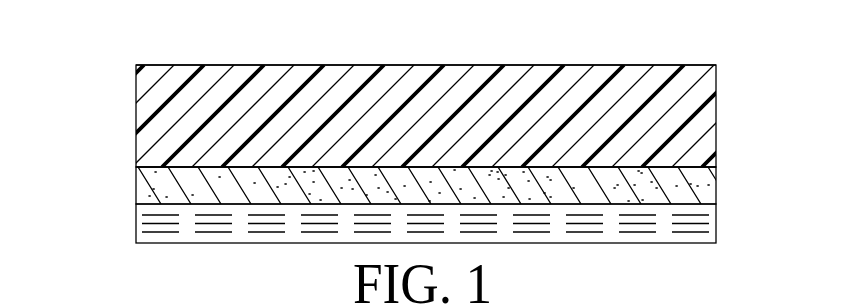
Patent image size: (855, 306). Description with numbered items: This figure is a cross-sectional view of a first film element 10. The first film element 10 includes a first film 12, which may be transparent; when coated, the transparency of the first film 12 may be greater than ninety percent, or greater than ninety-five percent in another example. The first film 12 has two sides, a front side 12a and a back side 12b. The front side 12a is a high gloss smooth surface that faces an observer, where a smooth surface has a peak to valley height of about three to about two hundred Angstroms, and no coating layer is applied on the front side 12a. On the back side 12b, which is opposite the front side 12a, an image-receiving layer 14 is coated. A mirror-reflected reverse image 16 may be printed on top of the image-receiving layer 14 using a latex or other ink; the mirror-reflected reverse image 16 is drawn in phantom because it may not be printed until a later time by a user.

The first film element 10 is at (103, 48).
The first film 12 is at (703, 131).
The front side 12a is at (513, 65).
The back side 12b is at (598, 168).
The image-receiving layer 14 is at (703, 189).
The mirror-reflected reverse image 16 is at (700, 225).